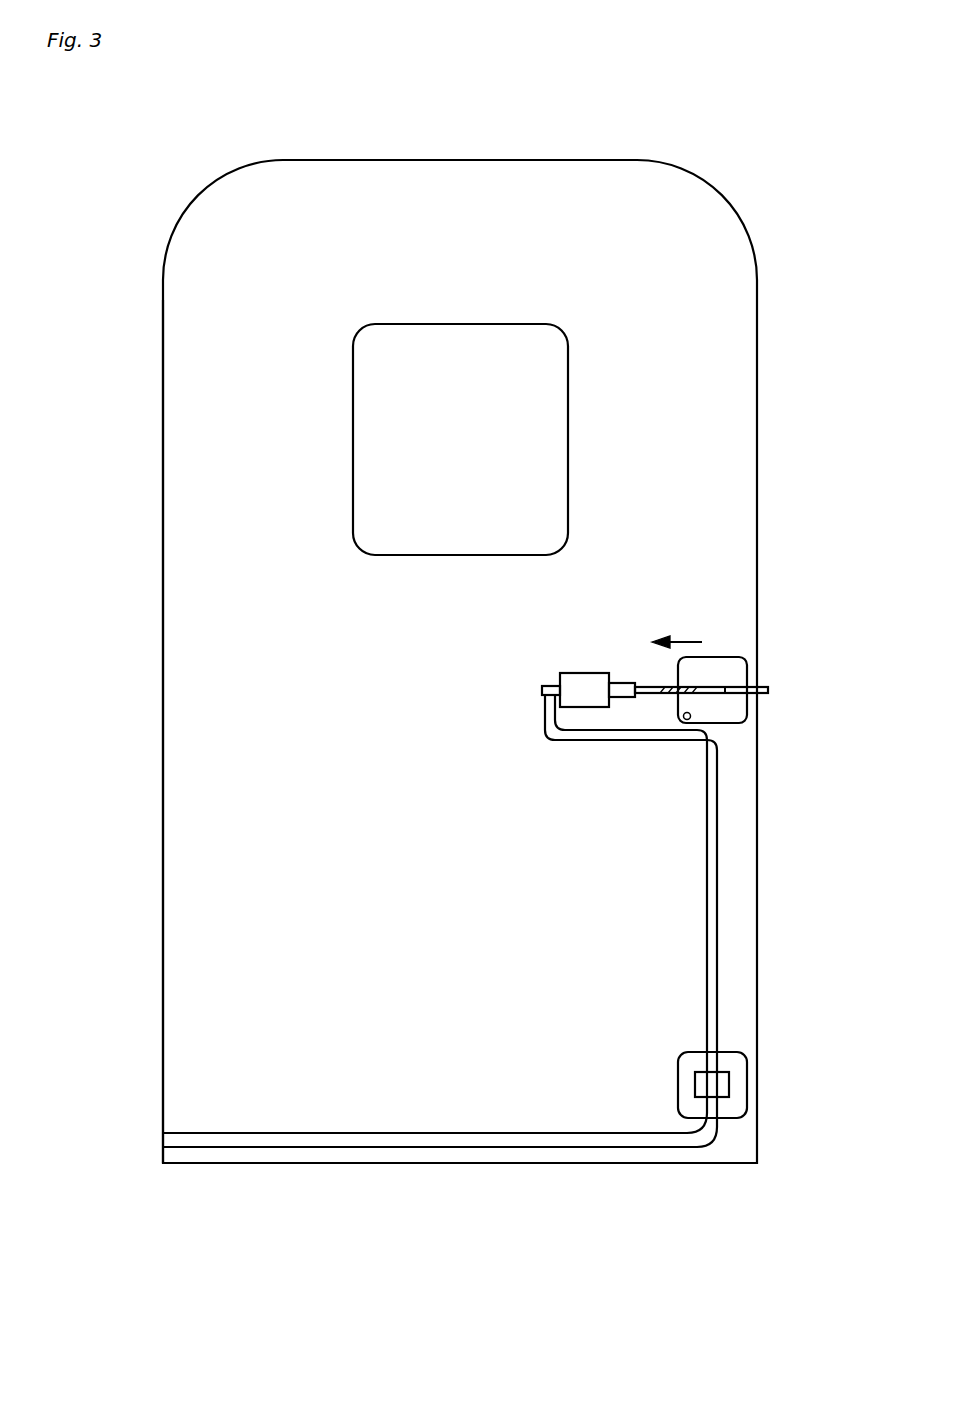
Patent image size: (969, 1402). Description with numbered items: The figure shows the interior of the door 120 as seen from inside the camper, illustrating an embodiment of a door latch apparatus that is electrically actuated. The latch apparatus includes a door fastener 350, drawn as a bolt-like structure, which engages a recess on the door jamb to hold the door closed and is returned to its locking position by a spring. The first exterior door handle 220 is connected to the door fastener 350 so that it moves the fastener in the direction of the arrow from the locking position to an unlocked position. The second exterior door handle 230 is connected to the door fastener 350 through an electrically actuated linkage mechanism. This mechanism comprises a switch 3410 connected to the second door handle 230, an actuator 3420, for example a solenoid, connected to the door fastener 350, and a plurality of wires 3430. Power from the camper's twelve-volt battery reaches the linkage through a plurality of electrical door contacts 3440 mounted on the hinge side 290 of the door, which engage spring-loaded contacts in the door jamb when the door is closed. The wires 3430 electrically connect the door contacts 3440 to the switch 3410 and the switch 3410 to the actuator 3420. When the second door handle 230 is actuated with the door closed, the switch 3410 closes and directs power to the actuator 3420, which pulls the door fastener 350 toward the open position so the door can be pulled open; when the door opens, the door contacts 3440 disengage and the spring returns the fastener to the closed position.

The door 120 is at (488, 138).
The hinge side 290 is at (163, 410).
The first exterior door handle 220 is at (725, 657).
The door fastener 350 is at (768, 693).
The actuator 3420 is at (573, 673).
The wires 3430 is at (708, 897).
The electrical door contacts 3440 is at (163, 1145).
The second exterior door handle 230 is at (727, 1052).
The switch 3410 is at (729, 1083).